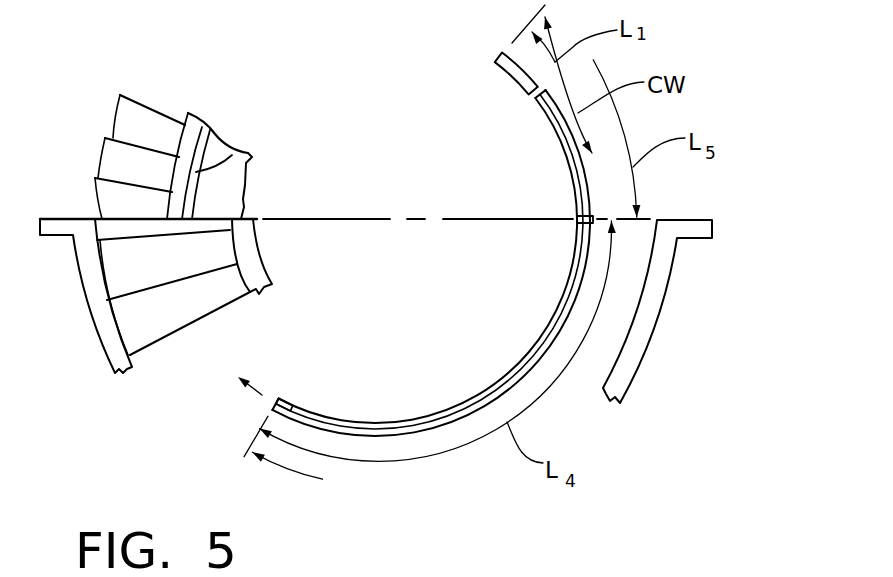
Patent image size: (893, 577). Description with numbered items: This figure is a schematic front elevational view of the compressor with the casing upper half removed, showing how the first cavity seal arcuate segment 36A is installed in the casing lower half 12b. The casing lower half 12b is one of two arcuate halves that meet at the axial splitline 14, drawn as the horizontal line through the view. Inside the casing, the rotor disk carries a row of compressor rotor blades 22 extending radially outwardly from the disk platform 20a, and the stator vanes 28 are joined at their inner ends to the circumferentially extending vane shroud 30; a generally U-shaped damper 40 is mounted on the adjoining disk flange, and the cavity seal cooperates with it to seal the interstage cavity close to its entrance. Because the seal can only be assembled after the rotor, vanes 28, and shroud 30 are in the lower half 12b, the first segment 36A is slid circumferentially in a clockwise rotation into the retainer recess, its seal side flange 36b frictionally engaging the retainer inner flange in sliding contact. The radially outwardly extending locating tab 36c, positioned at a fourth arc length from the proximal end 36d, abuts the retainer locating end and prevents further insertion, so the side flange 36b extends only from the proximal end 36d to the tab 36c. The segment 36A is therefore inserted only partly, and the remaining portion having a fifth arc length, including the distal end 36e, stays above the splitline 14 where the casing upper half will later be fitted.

The casing lower half 12b is at (683, 218).
The axial splitline 14 is at (310, 219).
The disk platform 20a is at (188, 113).
The compressor rotor blades 22 is at (137, 100).
The stator vanes 28 is at (168, 320).
The vane shroud 30 is at (257, 273).
The first cavity seal arcuate segment 36A is at (516, 364).
The seal side flange 36b is at (354, 421).
The locating tab 36c is at (580, 213).
The proximal end 36d is at (273, 396).
The distal end 36e is at (501, 57).
The damper 40 is at (237, 151).